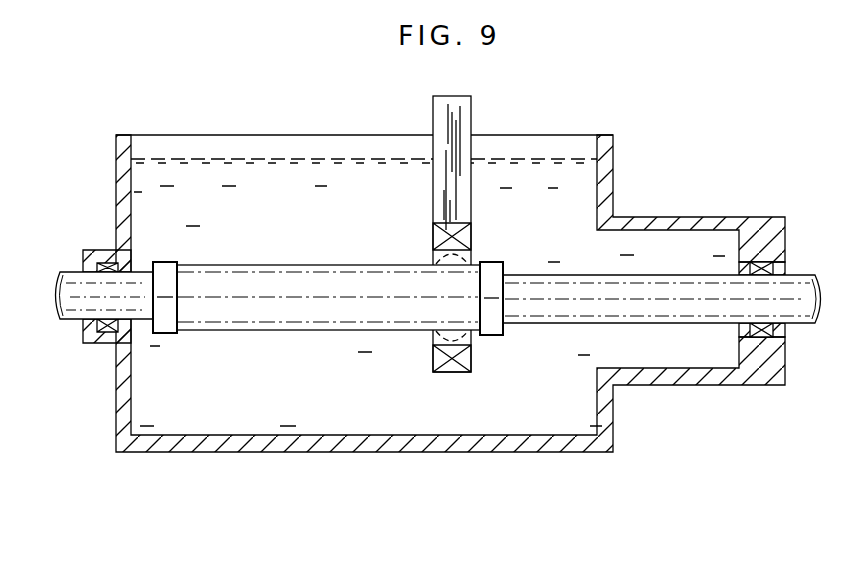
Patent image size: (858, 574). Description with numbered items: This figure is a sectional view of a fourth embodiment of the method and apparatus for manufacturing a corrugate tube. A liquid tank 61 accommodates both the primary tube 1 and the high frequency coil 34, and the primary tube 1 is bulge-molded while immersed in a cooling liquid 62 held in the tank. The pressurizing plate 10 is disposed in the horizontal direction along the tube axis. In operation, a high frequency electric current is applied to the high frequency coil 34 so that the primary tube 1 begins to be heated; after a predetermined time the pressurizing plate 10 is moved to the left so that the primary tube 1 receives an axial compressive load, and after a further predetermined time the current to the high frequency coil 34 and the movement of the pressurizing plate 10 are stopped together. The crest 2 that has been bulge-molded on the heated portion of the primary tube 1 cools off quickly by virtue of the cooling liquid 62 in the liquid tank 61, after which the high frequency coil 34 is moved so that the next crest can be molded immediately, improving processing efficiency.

The primary tube 1 is at (330, 319).
The crest 2 is at (470, 251).
The pressurizing plate 10 is at (492, 262).
The high frequency coil 34 is at (463, 372).
The liquid tank 61 is at (572, 452).
The cooling liquid 62 is at (538, 182).